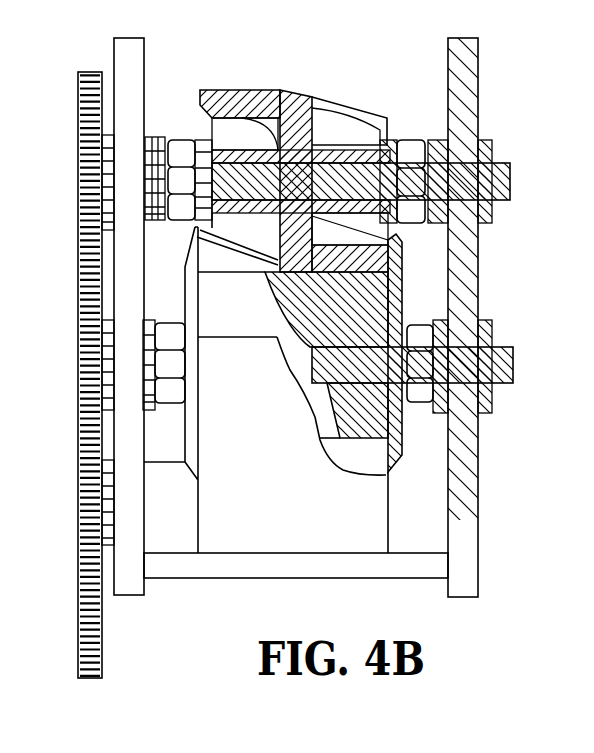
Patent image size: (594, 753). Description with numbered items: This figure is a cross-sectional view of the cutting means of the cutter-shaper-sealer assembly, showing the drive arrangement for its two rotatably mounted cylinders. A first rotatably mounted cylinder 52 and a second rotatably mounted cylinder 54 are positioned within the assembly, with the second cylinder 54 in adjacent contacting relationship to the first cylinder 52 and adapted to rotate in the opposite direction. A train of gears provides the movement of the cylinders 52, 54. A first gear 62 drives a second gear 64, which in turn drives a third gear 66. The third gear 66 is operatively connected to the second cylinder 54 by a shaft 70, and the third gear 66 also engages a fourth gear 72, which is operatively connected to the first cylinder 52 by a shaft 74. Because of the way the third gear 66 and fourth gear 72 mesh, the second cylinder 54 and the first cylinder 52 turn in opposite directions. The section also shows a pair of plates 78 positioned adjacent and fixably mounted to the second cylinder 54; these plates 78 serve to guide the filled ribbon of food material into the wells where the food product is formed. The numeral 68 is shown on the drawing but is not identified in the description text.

The first rotatably mounted cylinder 52 is at (250, 90).
The second rotatably mounted cylinder 54 is at (254, 315).
The first gear 62 is at (78, 650).
The second gear 64 is at (78, 542).
The third gear 66 is at (78, 372).
The pulley hub 68 is at (281, 477).
The shaft 70 is at (513, 352).
The fourth gear 72 is at (80, 122).
The shaft 74 is at (510, 168).
The pair of plates 78 is at (184, 283).